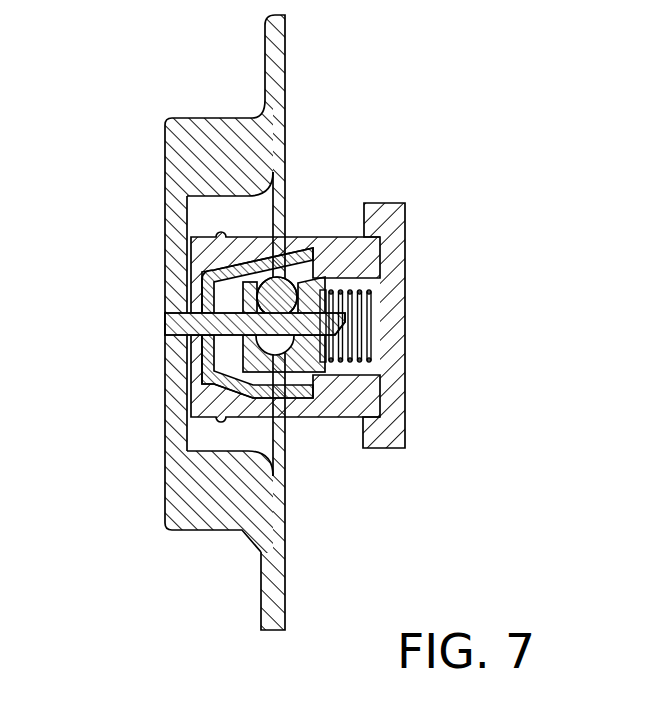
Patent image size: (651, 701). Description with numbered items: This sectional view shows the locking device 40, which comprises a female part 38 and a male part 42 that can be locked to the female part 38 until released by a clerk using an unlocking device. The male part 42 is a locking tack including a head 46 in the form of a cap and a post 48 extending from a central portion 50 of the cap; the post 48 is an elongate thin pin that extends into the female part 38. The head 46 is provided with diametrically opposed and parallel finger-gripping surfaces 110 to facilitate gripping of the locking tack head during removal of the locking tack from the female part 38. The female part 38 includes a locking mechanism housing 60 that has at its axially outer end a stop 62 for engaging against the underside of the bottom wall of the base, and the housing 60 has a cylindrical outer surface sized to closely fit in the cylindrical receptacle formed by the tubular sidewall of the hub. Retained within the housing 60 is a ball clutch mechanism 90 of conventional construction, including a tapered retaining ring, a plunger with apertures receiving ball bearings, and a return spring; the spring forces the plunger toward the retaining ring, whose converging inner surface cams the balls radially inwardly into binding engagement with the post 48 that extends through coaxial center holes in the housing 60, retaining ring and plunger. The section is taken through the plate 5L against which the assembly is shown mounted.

The flange 5L is at (232, 118).
The female part 38 is at (288, 319).
The locking device 40 is at (164, 331).
The male part 42 is at (164, 323).
The head 46 is at (177, 224).
The post 48 is at (207, 352).
The central portion 50 is at (173, 408).
The locking mechanism housing 60 is at (338, 410).
The stop 62 is at (390, 450).
The ball clutch mechanism 90 is at (366, 282).
The finger-gripping surfaces 110 is at (207, 118).